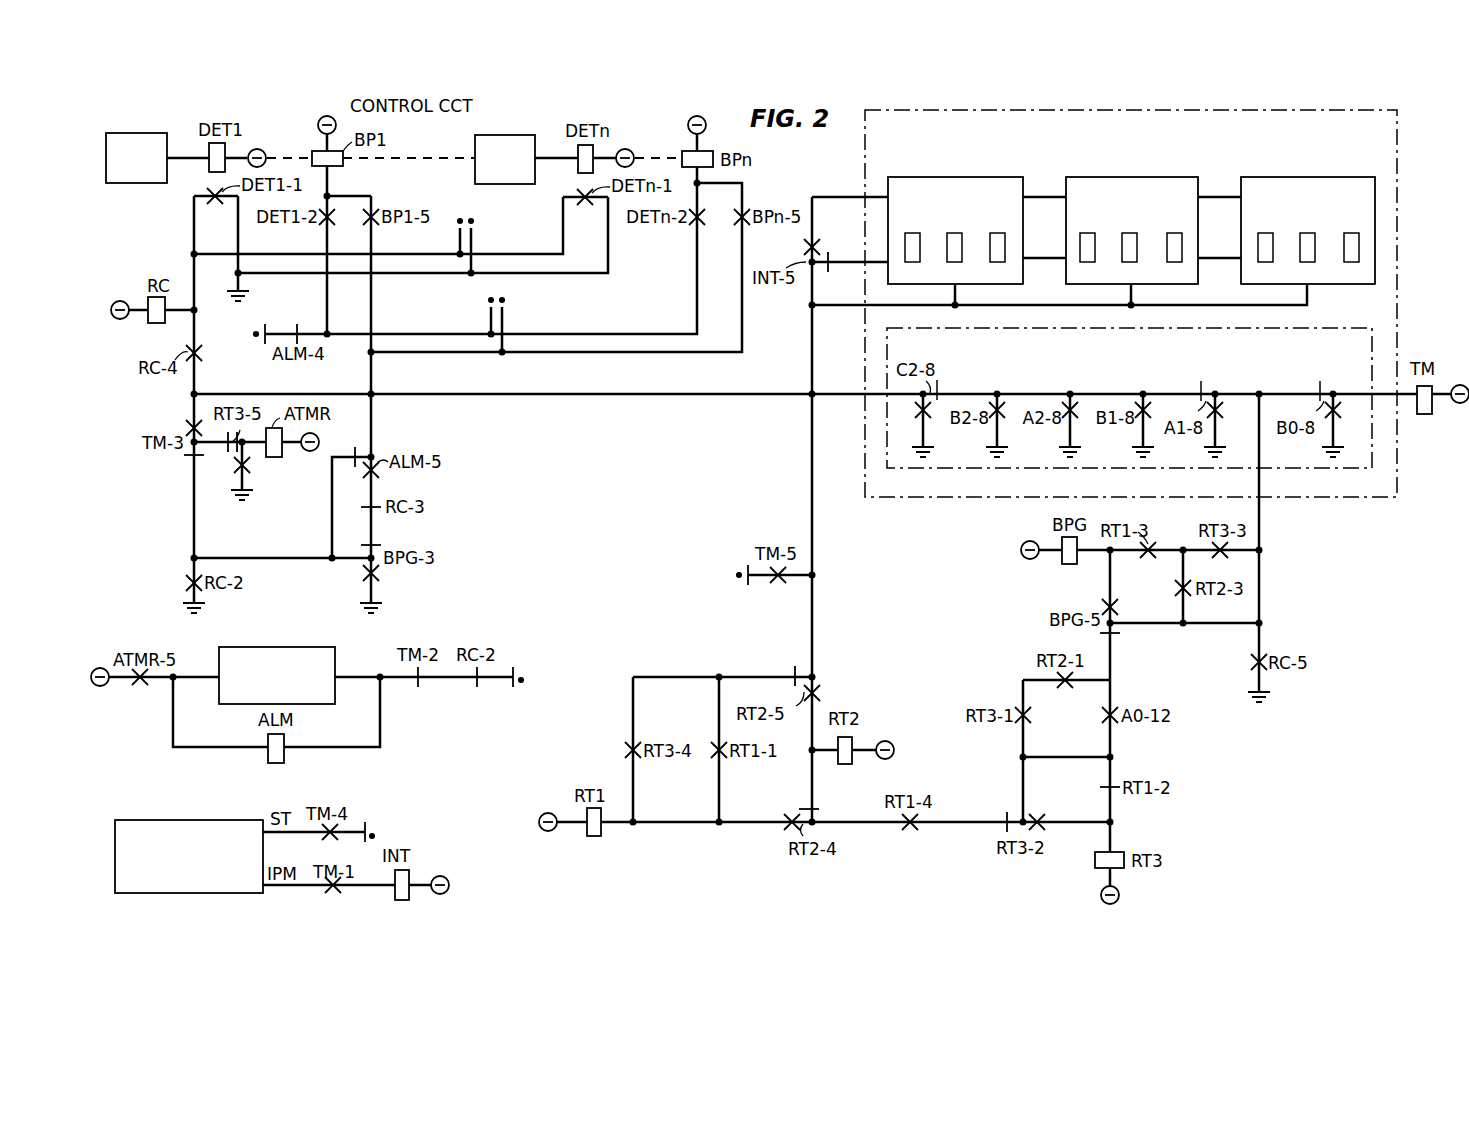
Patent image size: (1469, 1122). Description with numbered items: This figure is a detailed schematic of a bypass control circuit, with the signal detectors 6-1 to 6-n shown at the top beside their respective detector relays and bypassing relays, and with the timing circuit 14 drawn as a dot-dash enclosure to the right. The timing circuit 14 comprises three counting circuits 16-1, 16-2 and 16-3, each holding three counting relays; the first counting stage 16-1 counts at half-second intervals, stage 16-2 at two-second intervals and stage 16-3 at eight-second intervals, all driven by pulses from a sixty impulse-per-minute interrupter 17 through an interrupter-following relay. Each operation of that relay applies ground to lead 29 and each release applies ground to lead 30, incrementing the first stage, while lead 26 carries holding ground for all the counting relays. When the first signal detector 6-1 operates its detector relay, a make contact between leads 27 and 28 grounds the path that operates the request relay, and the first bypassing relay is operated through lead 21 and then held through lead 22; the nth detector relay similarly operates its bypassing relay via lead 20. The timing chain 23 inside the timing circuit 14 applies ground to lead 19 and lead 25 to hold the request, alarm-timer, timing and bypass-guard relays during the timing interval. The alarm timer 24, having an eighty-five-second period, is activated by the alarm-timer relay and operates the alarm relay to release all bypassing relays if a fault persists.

The signal detector 6-1 is at (140, 133).
The signal detector 6-n is at (506, 135).
The timing circuit 14 is at (1397, 200).
The counting circuit 16-1 is at (973, 177).
The counting circuit 16-2 is at (1134, 177).
The counting circuit 16-3 is at (1317, 177).
The 60 impulse-per-minute interrupter 17 is at (200, 820).
The lead 19 is at (600, 394).
The lead 20 is at (694, 298).
The lead 21 is at (324, 297).
The lead 22 is at (376, 296).
The timing chain 23 is at (1328, 328).
The alarm timer 24 is at (290, 647).
The lead 25 is at (1262, 518).
The lead 26 is at (842, 306).
The lead 27 is at (234, 268).
The lead 28 is at (190, 263).
The lead 29 is at (846, 197).
The lead 30 is at (850, 262).